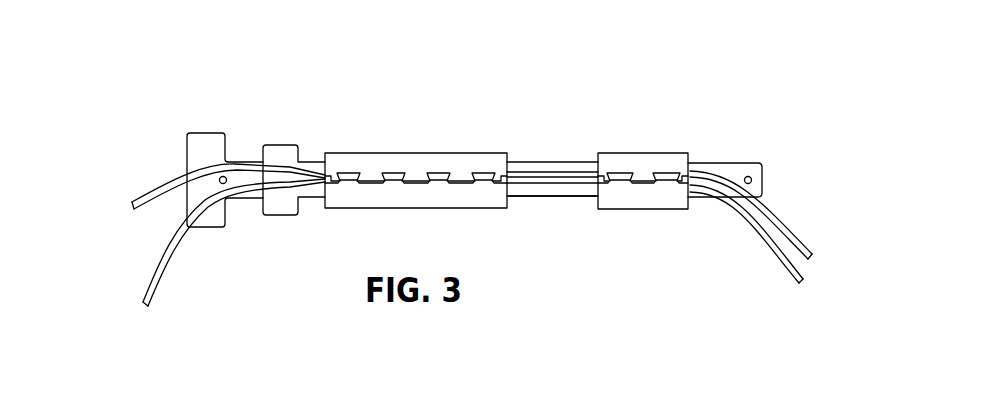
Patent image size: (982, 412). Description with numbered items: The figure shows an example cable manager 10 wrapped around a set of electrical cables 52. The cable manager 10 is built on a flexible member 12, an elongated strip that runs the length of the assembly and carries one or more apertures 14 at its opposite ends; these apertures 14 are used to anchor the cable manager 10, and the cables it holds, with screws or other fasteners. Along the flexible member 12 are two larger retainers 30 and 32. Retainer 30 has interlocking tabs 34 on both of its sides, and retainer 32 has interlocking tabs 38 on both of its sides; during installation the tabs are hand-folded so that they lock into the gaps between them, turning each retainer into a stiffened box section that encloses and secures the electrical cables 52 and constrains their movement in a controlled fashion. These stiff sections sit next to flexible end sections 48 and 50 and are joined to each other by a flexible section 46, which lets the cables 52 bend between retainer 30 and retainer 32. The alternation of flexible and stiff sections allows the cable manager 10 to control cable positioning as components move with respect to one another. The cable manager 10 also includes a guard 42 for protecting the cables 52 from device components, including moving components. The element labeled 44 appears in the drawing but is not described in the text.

The cable manager 10 is at (687, 100).
The flexible member 12 is at (553, 162).
The apertures 14 is at (219, 183).
The retainer 30 is at (492, 210).
The retainer 32 is at (673, 208).
The interlocking tabs 34 is at (347, 172).
The interlocking tabs 38 is at (618, 173).
The guard 42 is at (282, 214).
The end body portion 44 is at (208, 221).
The flexible section 46 is at (528, 193).
The flexible end section 48 is at (248, 178).
The flexible end section 50 is at (728, 170).
The electrical cables 52 is at (572, 175).